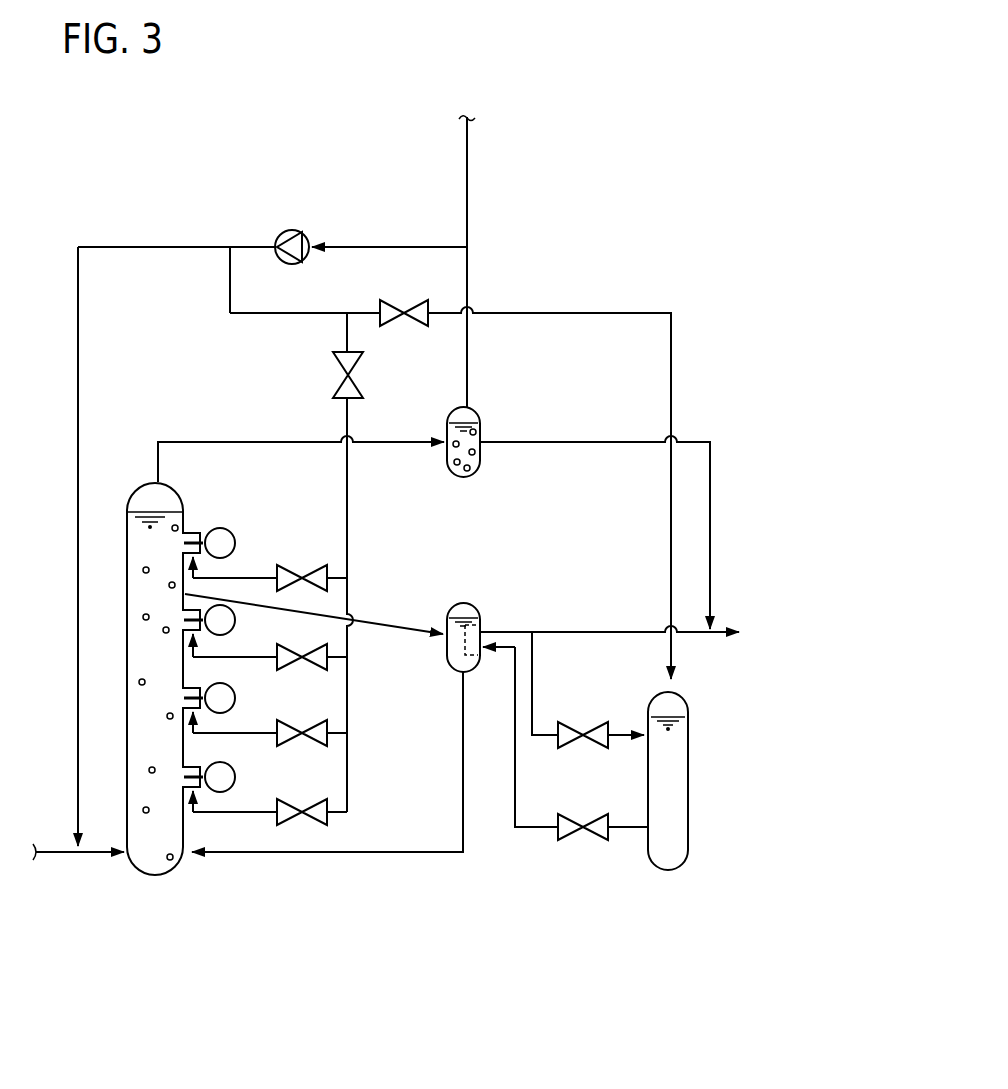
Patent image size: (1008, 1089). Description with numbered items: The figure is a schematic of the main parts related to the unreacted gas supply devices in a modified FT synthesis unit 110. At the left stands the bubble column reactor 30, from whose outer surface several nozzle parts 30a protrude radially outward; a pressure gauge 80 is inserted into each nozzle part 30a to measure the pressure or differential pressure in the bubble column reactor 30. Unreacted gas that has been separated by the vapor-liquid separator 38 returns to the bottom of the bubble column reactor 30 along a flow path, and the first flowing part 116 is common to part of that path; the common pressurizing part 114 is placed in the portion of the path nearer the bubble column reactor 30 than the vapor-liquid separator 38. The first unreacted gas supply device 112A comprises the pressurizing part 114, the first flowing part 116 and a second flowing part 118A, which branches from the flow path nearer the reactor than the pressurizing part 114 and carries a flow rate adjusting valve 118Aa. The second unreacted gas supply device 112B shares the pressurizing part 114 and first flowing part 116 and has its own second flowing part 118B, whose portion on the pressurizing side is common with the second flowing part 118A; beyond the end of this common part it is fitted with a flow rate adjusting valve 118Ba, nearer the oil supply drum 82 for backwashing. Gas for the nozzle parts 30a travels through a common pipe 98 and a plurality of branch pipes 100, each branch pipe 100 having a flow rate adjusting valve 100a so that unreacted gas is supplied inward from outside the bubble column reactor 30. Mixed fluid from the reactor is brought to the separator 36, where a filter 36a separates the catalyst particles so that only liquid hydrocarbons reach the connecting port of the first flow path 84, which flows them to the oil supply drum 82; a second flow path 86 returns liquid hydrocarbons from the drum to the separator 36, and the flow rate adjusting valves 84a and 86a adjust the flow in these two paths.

The bubble column reactor 30 is at (130, 866).
The nozzle part 30a is at (198, 536).
The separator 36 is at (458, 673).
The filter 36a is at (463, 655).
The vapor-liquid separator 38 is at (479, 413).
The pressure gauge 80 is at (222, 528).
The oil supply drum for backwashing 82 is at (689, 840).
The first flow path 84 is at (534, 659).
The flow rate adjusting valve 84a is at (578, 721).
The second flow path 86 is at (526, 830).
The flow rate adjusting valve 86a is at (566, 839).
The common pipe 98 is at (349, 467).
The branch pipes 100 is at (333, 575).
The flow rate adjusting valve 100a is at (290, 596).
The FT synthesis unit 110 is at (579, 121).
The first unreacted gas supply device 112A is at (366, 510).
The second unreacted gas supply device 112B is at (690, 289).
The pressurizing part 114 is at (290, 228).
The first flowing part 116 is at (471, 258).
The second flowing part 118A is at (343, 534).
The flow rate adjusting valve 118Aa is at (336, 383).
The second flowing part 118B is at (676, 355).
The flow rate adjusting valve 118Ba is at (381, 305).